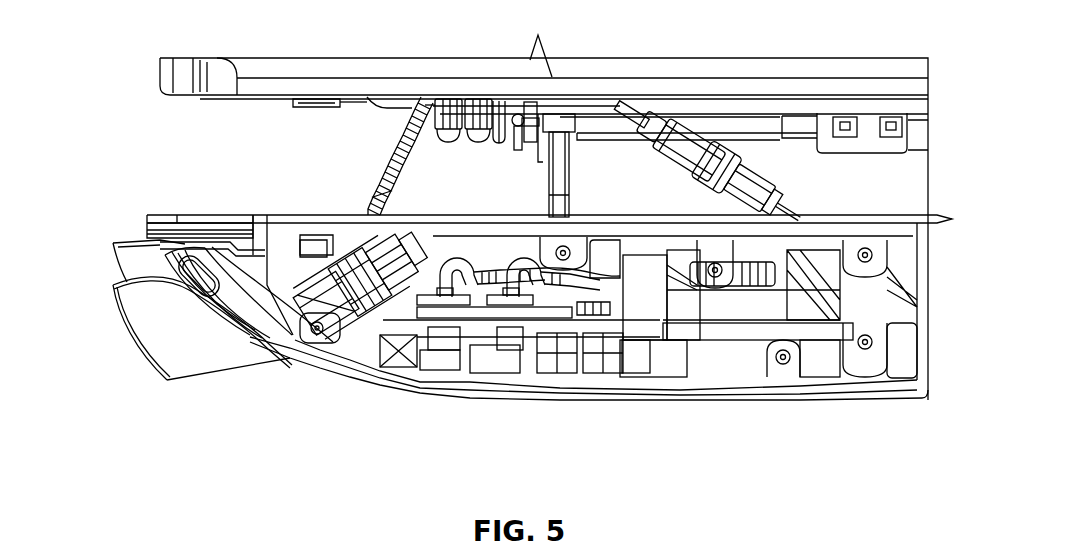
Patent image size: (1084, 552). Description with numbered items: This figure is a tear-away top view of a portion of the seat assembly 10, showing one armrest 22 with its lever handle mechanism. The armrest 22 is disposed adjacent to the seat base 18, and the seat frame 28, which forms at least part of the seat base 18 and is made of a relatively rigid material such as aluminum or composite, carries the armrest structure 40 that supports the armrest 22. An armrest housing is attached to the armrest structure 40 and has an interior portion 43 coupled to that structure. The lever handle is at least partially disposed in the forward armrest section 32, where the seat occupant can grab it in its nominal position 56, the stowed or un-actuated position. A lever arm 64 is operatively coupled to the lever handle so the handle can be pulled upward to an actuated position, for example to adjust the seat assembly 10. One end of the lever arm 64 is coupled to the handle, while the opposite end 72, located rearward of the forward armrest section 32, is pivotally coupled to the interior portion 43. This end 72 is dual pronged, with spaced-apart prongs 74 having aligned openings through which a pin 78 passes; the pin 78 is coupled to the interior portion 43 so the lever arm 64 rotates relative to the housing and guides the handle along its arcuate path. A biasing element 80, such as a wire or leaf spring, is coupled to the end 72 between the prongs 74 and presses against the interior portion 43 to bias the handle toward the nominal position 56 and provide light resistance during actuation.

The seat assembly 10 is at (828, 88).
The seat base 18 is at (282, 88).
The seat frame 28 is at (412, 88).
The armrest 22 is at (643, 395).
The forward armrest section 32 is at (118, 267).
The armrest structure 40 is at (837, 233).
The interior portion 43 is at (402, 255).
The nominal position 56 is at (173, 363).
The lever arm 64 is at (220, 296).
The end 72 is at (352, 272).
The prongs 74 is at (360, 262).
The pin 78 is at (383, 330).
The biasing element 80 is at (262, 343).